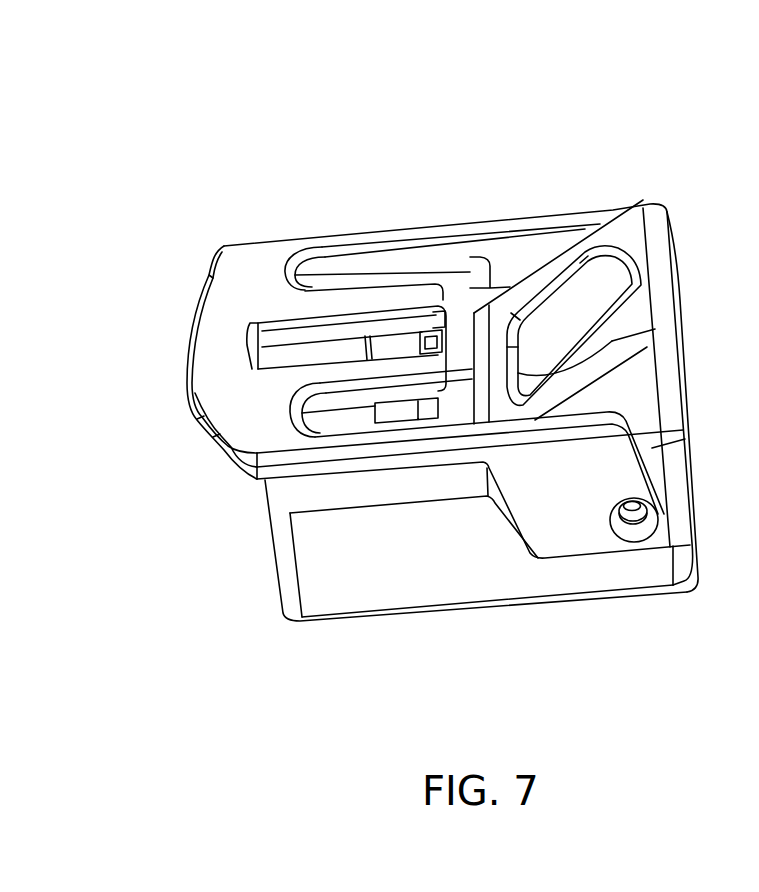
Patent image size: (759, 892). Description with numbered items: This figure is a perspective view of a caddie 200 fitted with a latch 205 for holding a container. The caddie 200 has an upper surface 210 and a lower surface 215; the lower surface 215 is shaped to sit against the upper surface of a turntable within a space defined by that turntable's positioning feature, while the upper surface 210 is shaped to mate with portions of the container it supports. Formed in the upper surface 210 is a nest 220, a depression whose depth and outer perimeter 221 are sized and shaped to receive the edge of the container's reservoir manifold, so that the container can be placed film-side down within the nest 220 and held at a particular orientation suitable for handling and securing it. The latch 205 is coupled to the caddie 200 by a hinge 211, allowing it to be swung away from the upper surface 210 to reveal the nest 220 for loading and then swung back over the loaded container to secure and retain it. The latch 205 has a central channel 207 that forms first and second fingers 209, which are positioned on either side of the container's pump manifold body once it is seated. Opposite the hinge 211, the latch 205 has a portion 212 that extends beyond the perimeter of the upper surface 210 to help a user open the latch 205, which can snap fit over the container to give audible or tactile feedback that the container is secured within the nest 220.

The caddie 200 is at (145, 130).
The latch 205 is at (167, 240).
The central channel 207 is at (296, 359).
The first and second fingers 209 is at (313, 381).
The upper surface 210 is at (277, 494).
The hinge 211 is at (632, 520).
The portion 212 is at (245, 256).
The lower surface 215 is at (414, 613).
The nest 220 is at (567, 257).
The outer perimeter 221 is at (600, 300).